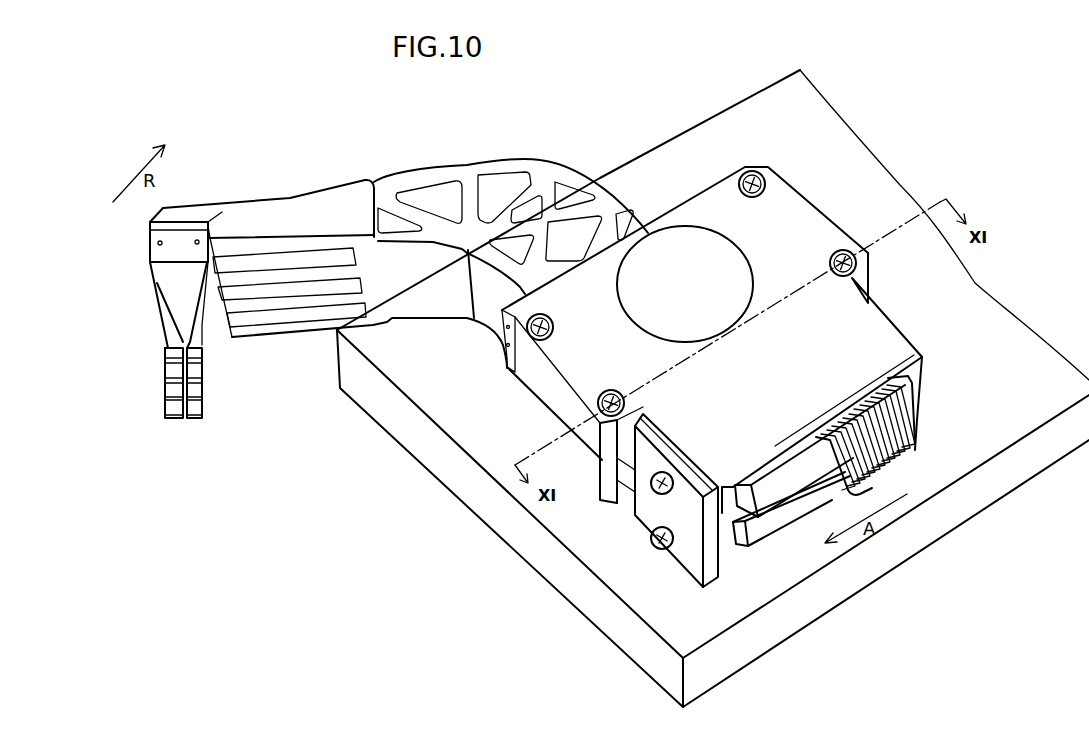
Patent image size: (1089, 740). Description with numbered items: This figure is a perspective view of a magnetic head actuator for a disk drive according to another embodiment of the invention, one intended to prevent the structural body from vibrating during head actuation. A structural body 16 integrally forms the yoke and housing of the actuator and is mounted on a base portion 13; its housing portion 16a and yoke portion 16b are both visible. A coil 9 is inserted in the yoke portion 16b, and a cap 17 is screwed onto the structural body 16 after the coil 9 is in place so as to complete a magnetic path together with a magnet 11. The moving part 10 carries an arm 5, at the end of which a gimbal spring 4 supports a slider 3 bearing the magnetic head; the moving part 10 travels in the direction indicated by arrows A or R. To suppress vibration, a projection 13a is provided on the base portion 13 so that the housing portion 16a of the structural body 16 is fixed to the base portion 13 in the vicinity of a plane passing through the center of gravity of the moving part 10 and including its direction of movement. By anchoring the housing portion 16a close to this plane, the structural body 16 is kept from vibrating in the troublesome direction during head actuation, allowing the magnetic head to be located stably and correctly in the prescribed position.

The slider 3 is at (198, 420).
The gimbal spring 4 is at (177, 297).
The arm 5 is at (300, 213).
The coil 9 is at (917, 410).
The moving part 10 is at (628, 180).
The magnet 11 is at (748, 547).
The base portion 13 is at (837, 577).
The projection 13a is at (513, 400).
The structural body 16 is at (849, 228).
The housing portion 16a is at (770, 208).
The yoke portion 16b is at (900, 352).
The cap 17 is at (692, 550).